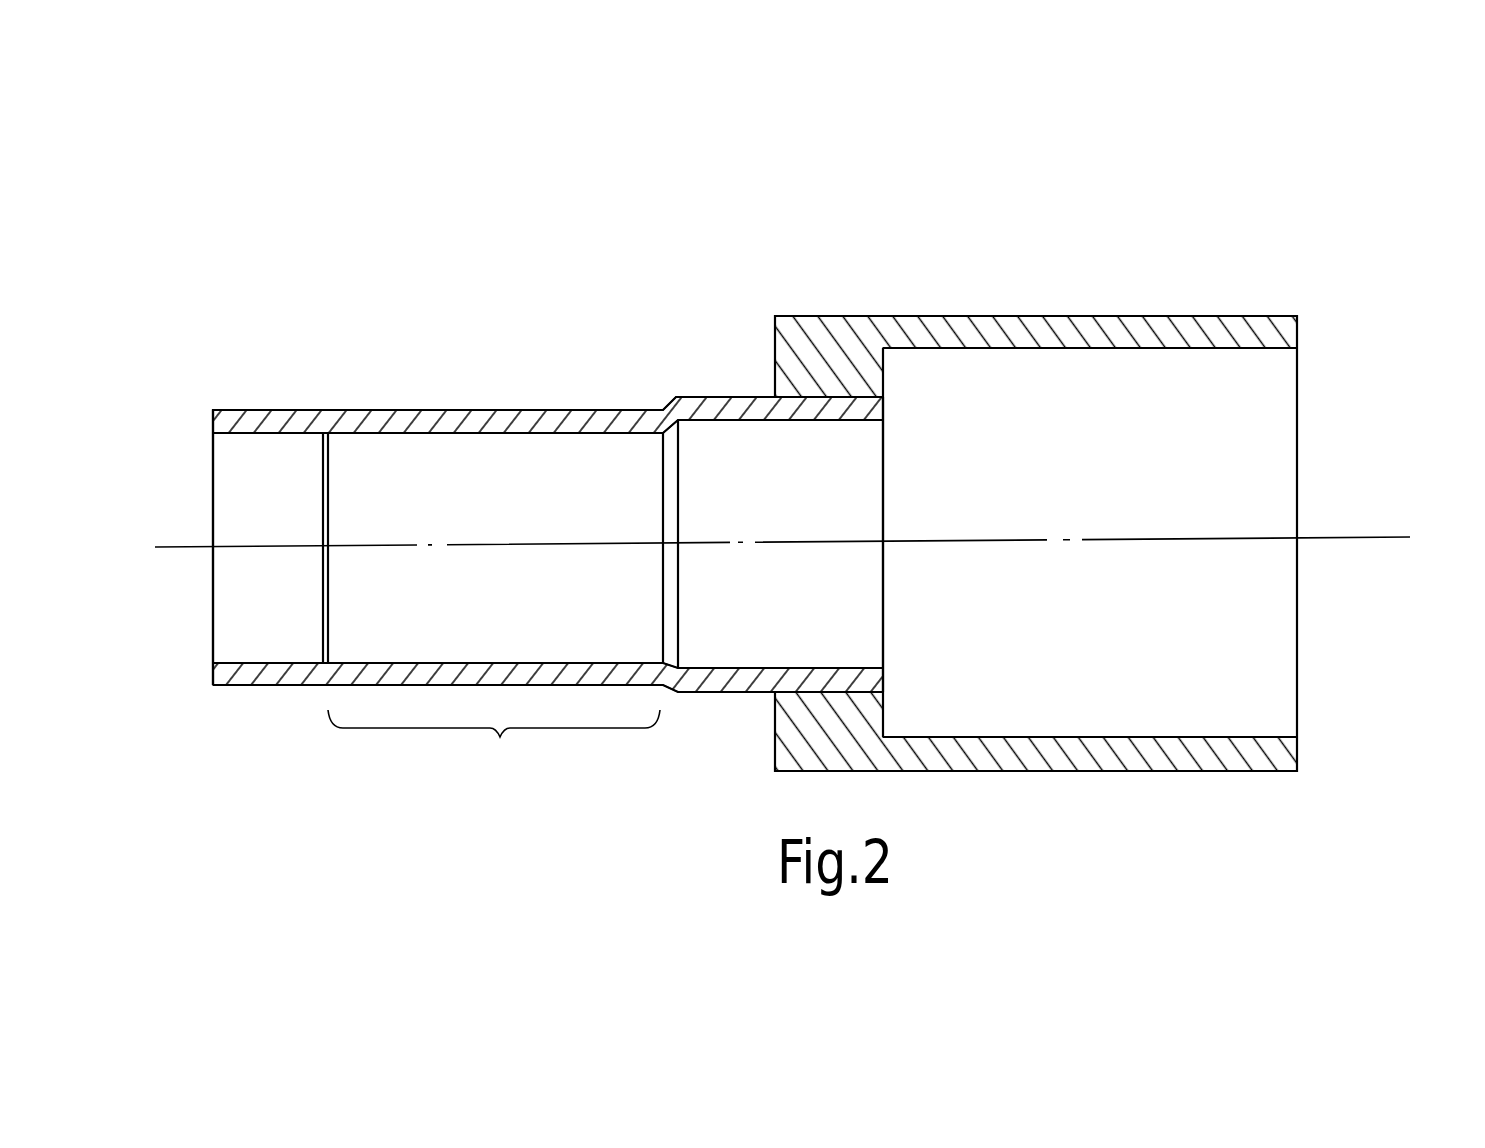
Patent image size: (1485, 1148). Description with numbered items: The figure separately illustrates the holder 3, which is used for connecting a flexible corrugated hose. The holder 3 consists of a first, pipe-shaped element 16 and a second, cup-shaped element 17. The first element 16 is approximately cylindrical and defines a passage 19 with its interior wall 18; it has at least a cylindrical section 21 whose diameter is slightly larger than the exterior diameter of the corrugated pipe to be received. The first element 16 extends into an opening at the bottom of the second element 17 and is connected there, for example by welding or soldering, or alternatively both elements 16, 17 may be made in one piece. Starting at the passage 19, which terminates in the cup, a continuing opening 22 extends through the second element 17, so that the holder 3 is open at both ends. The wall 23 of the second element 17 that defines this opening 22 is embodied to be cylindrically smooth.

The holder 3 is at (783, 430).
The first, pipe-shaped element 16 is at (496, 465).
The second, cup-shaped element 17 is at (1115, 444).
The interior wall 18 is at (490, 622).
The passage 19 is at (283, 610).
The cylindrical section 21 is at (494, 741).
The continuing opening 22 is at (1245, 430).
The wall 23 is at (1178, 670).